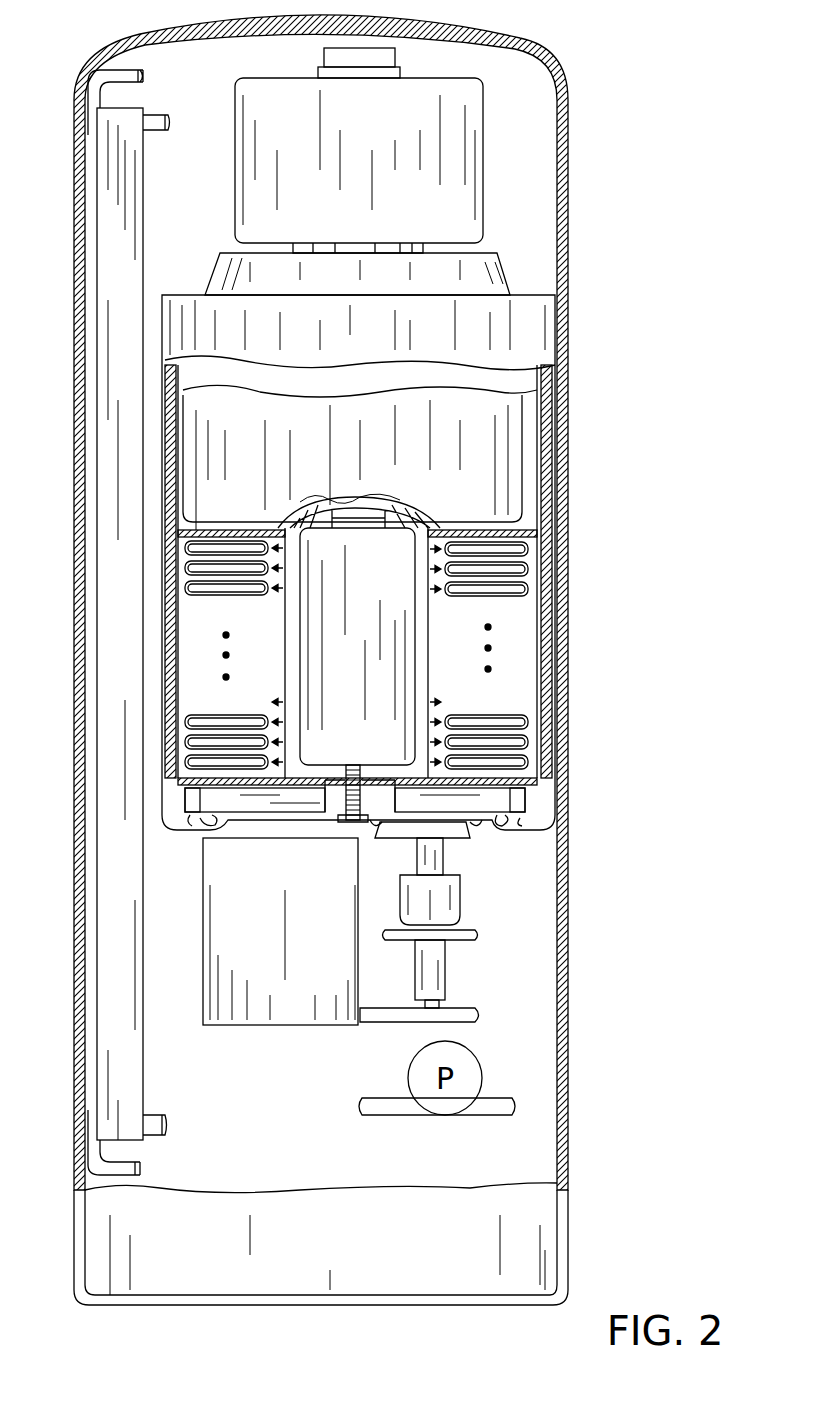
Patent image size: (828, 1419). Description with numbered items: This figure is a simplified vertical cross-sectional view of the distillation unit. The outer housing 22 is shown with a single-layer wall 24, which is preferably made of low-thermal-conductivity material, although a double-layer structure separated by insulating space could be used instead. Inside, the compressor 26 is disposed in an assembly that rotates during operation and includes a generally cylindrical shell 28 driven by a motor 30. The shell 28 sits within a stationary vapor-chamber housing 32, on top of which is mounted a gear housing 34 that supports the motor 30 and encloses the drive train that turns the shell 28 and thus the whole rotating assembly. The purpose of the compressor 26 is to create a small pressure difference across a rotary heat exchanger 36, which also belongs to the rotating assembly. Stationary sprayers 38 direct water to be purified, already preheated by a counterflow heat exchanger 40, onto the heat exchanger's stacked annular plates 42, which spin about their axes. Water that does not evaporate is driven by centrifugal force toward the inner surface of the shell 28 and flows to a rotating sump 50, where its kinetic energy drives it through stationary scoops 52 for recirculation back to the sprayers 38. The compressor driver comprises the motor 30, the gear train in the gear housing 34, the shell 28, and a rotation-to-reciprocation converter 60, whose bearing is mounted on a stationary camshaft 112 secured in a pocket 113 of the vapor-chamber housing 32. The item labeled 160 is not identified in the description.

The housing 22 is at (568, 676).
The single-layer wall 24 is at (565, 392).
The compressor 26 is at (522, 506).
The cylindrical shell 28 is at (540, 465).
The motor 30 is at (483, 155).
The vapor-chamber housing 32 is at (553, 414).
The gear housing 34 is at (495, 256).
The rotary heat exchanger 36 is at (522, 632).
The stationary sprayers 38 is at (285, 642).
The counterflow heat exchanger 40 is at (145, 912).
The stacked annular plates 42 is at (528, 563).
The rotating sump 50 is at (534, 832).
The stationary scoops 52 is at (166, 826).
The rotation-to-reciprocation converter 60 is at (300, 678).
The camshaft 112 is at (347, 790).
The pocket 113 is at (356, 825).
The control box 160 is at (248, 832).